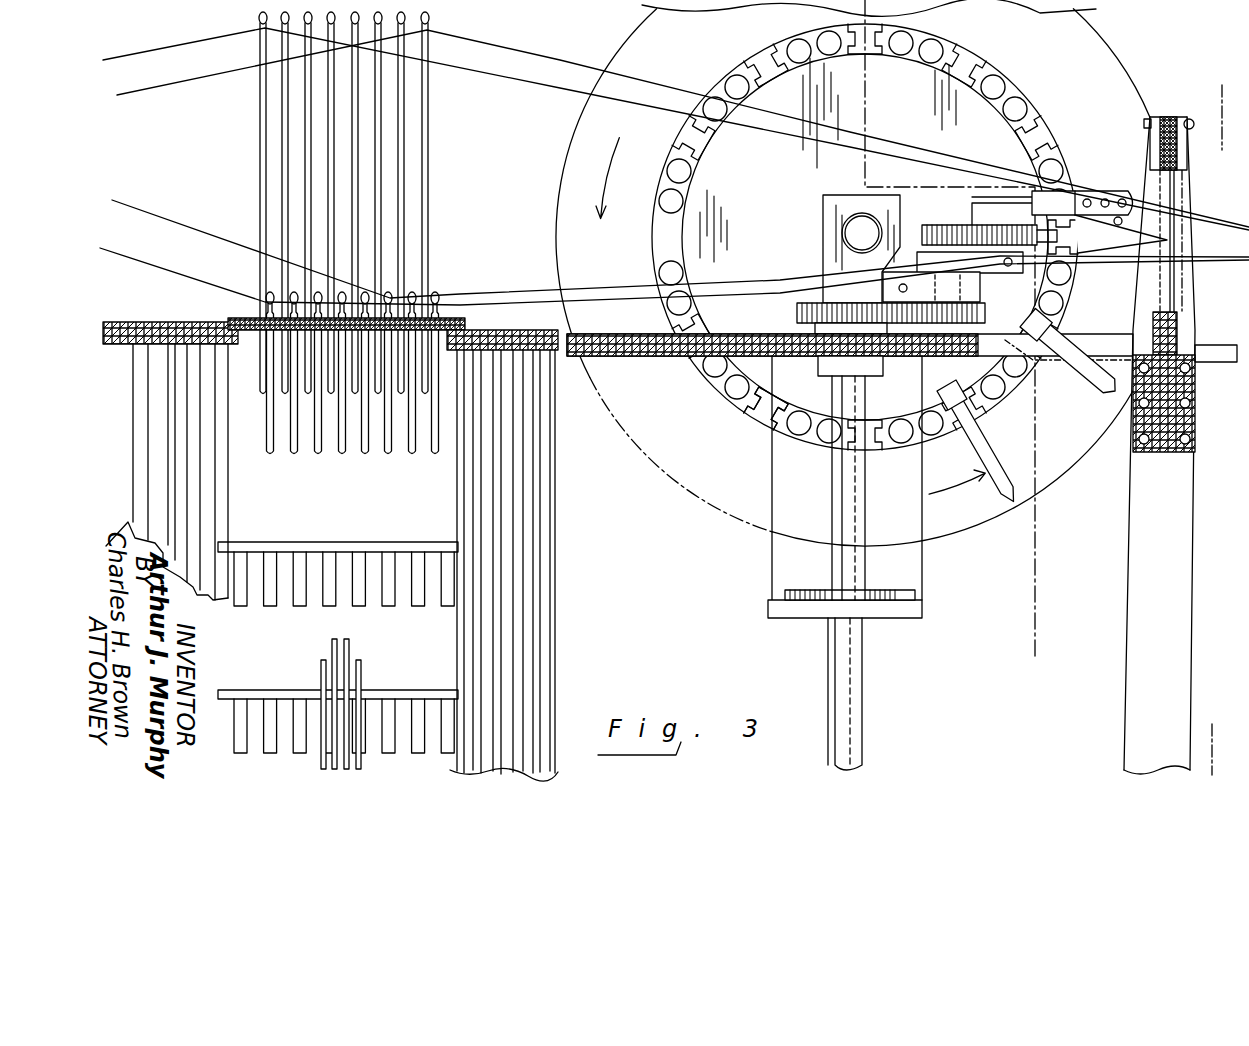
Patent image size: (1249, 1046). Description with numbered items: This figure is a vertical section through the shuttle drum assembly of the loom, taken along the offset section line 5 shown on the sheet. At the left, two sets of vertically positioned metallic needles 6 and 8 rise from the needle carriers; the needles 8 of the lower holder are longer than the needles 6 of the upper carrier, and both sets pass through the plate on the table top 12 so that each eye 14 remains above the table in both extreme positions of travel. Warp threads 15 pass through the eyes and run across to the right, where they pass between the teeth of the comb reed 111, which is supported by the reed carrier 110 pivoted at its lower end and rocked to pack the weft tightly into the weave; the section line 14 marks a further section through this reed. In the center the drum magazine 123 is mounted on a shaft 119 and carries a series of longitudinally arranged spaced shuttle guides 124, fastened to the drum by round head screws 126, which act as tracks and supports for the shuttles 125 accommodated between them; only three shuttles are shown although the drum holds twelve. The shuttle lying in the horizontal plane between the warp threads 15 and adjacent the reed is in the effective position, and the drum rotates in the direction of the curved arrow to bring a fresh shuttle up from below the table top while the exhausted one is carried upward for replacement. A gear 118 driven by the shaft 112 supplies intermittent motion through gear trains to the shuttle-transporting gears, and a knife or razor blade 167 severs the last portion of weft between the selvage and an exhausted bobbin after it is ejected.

The section line 5- 5 is at (1031, 661).
The needles 6 is at (326, 452).
The needles 8 is at (380, 150).
The table top 12 is at (170, 320).
The eye 14 is at (1208, 769).
The warp threads 15 is at (177, 82).
The reed carrier 110 is at (1138, 585).
The comb reed 111 is at (1186, 160).
The shaft 112 is at (850, 703).
The gear 118 is at (797, 312).
The shaft 119 is at (852, 233).
The drum magazine 123 is at (692, 234).
The shuttle guides 124 is at (762, 70).
The shuttles 125 is at (1132, 246).
The round head screws 126 is at (681, 196).
The knife or razor blade 167 is at (1137, 152).